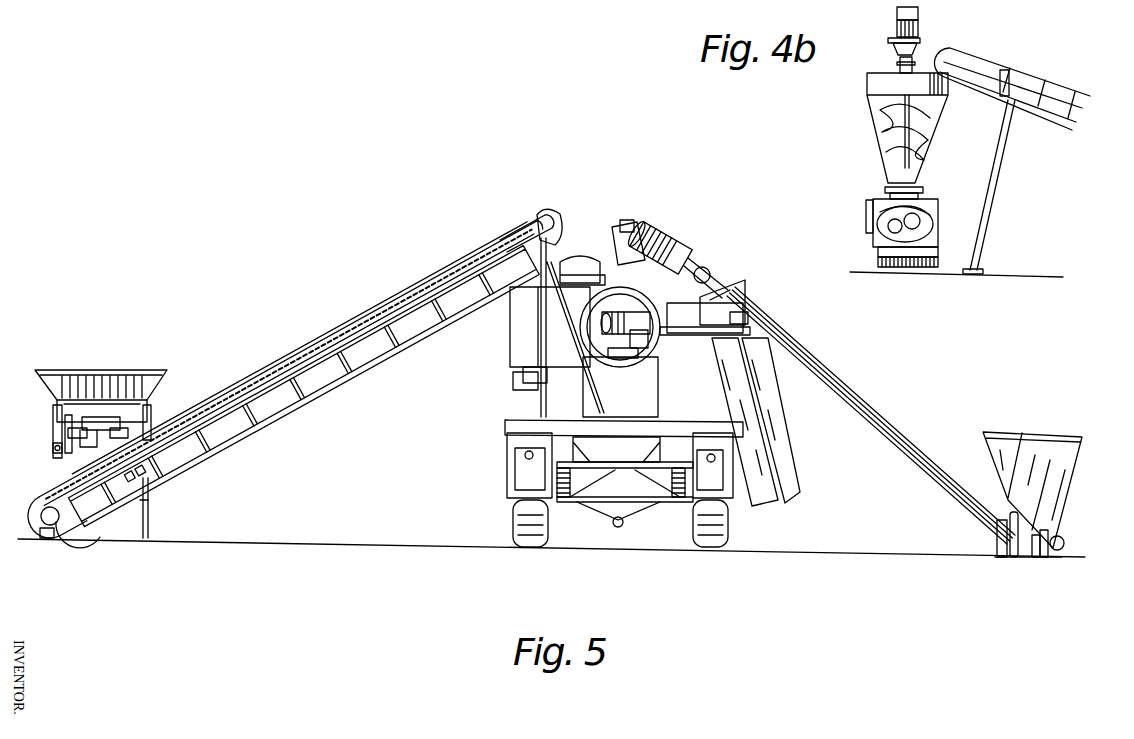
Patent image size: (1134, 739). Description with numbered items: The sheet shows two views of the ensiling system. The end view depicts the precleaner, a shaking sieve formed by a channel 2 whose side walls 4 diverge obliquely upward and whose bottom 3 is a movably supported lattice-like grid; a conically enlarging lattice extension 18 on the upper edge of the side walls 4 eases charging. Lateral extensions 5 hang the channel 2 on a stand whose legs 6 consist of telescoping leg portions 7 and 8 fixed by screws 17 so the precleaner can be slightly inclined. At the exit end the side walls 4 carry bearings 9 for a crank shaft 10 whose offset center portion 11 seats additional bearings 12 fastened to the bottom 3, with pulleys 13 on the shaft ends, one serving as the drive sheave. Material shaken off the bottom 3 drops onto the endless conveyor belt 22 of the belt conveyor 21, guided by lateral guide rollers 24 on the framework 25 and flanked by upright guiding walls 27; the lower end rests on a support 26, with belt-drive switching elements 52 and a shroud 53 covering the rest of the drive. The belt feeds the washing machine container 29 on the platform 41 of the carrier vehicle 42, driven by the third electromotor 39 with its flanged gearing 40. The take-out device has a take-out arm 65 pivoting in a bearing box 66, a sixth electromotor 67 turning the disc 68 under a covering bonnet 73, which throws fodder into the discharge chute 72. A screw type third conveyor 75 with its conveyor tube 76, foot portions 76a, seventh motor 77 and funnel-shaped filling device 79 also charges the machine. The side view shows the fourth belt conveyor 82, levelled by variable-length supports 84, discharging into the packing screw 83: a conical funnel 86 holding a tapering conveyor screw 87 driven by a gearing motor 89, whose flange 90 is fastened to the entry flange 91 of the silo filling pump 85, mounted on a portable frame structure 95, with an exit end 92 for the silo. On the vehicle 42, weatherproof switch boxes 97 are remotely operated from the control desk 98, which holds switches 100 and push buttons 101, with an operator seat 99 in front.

In FIG. 5, the channel 2 is at (88, 408).
In FIG. 5, the bottom 3 is at (113, 418).
In FIG. 5, the side walls 4 is at (55, 414).
In FIG. 5, the lateral extensions 5 is at (122, 424).
In FIG. 5, the legs 6 is at (140, 525).
In FIG. 5, the leg portion 7 is at (150, 420).
In FIG. 5, the leg portion 8 is at (150, 527).
In FIG. 5, the bearings 9 is at (56, 449).
In FIG. 5, the crank shaft 10 is at (68, 497).
In FIG. 5, the center portion 11 is at (80, 440).
In FIG. 5, the additional bearings 12 is at (115, 440).
In FIG. 5, the pulleys 13 is at (66, 432).
In FIG. 5, the fixing screws 17 is at (84, 446).
In FIG. 5, the conically enlarging extension 18 is at (66, 378).
In FIG. 5, the belt conveyor 21 is at (305, 406).
In FIG. 5, the conveyor belt 22 is at (283, 426).
In FIG. 5, the lateral guide rollers 24 is at (252, 440).
In FIG. 5, the framework 25 is at (342, 338).
In FIG. 5, the support 26 is at (88, 548).
In FIG. 5, the upright guiding walls 27 is at (273, 376).
In FIG. 5, the container 29 is at (520, 386).
In FIG. 5, the third electromotor 39 is at (540, 352).
In FIG. 5, the gearing 40 is at (548, 332).
In FIG. 5, the platform 41 is at (512, 428).
In FIG. 5, the carrier vehicle 42 is at (566, 479).
In FIG. 5, the switching elements 52 is at (150, 473).
In FIG. 5, the shroud 53 is at (50, 540).
In FIG. 5, the take-out arm 65 is at (638, 349).
In FIG. 5, the bearing box 66 is at (620, 360).
In FIG. 5, the sixth electromotor 67 is at (612, 336).
In FIG. 5, the disc 68 is at (748, 322).
In FIG. 5, the discharge chute 72 is at (782, 478).
In FIG. 5, the covering bonnet 73 is at (735, 300).
In FIG. 5, the third conveyor 75 is at (871, 415).
In FIG. 5, the conveyor tube 76 is at (915, 445).
In FIG. 5, the foot portions 76a is at (995, 533).
In FIG. 5, the seventh motor 77 is at (670, 250).
In FIG. 5, the filling device 79 is at (1030, 445).
In FIG. 4b, the belt conveyor 82 is at (1062, 88).
In FIG. 4b, the packing screw 83 is at (898, 128).
In FIG. 4b, the supports 84 is at (990, 215).
In FIG. 4b, the silo filling pump 85 is at (871, 248).
In FIG. 4b, the funnel 86 is at (868, 100).
In FIG. 4b, the conveyor screw 87 is at (893, 158).
In FIG. 4b, the gearing motor 89 is at (897, 14).
In FIG. 4b, the flange 90 is at (885, 190).
In FIG. 4b, the entry flange 91 is at (918, 196).
In FIG. 4b, the exit end 92 is at (865, 216).
In FIG. 4b, the portable frame structure 95 is at (905, 269).
In FIG. 5, the switch boxes 97 is at (520, 251).
In FIG. 5, the control desk 98 is at (658, 230).
In FIG. 5, the seat 99 is at (548, 214).
In FIG. 5, the switches 100 is at (612, 235).
In FIG. 5, the push buttons 101 is at (626, 220).